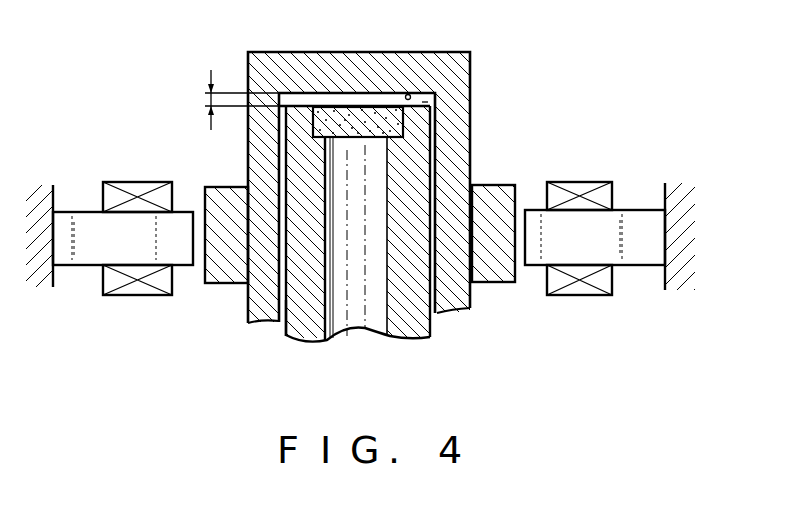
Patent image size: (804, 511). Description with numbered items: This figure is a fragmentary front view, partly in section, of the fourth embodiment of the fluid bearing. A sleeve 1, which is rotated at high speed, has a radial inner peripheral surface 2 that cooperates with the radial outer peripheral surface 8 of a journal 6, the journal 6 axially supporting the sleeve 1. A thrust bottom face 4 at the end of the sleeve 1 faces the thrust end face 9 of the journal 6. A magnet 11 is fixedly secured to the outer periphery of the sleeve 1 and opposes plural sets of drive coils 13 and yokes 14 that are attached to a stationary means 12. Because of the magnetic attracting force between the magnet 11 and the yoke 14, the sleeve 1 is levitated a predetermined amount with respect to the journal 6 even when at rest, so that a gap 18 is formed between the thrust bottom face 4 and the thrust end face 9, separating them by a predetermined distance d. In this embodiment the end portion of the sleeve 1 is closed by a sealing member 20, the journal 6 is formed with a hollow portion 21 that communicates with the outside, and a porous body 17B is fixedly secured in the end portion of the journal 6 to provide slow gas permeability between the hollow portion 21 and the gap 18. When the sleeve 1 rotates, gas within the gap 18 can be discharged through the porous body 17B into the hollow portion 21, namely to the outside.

The sleeve 1 is at (476, 86).
The radial inner peripheral surface 2 is at (437, 133).
The thrust bottom face 4 is at (406, 94).
The journal 6 is at (297, 340).
The radial outer peripheral surface 8 is at (284, 287).
The thrust end face 9 is at (300, 105).
The magnet 11 is at (216, 187).
The stationary means 12 is at (683, 200).
The drive coils 13 is at (137, 182).
The yokes 14 is at (70, 212).
The porous body 17B is at (362, 108).
The gap 18 is at (425, 100).
The sealing member 20 is at (338, 60).
The hollow portion 21 is at (363, 325).
The predetermined distance d is at (235, 100).